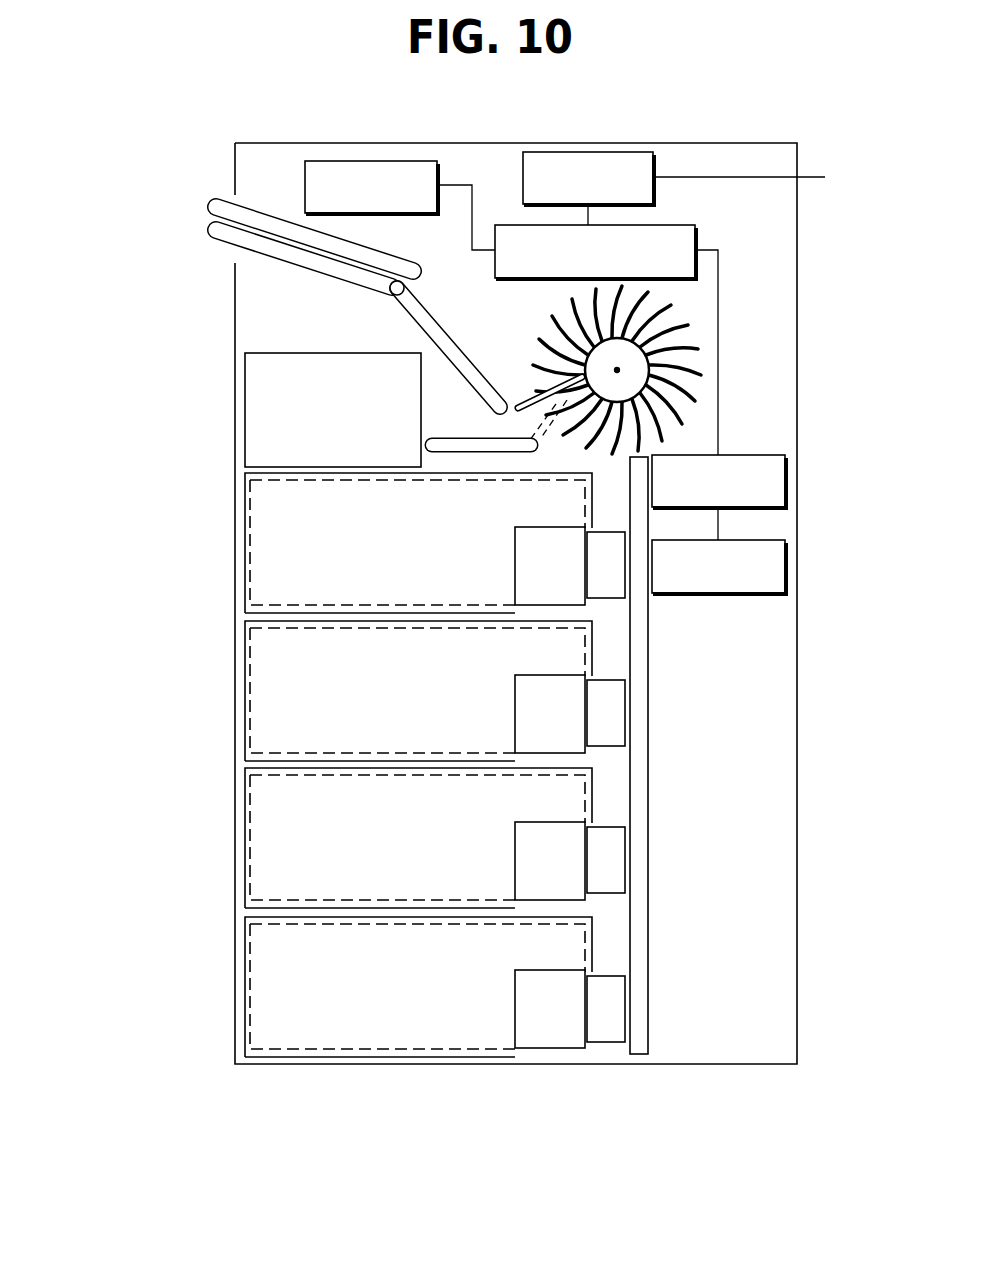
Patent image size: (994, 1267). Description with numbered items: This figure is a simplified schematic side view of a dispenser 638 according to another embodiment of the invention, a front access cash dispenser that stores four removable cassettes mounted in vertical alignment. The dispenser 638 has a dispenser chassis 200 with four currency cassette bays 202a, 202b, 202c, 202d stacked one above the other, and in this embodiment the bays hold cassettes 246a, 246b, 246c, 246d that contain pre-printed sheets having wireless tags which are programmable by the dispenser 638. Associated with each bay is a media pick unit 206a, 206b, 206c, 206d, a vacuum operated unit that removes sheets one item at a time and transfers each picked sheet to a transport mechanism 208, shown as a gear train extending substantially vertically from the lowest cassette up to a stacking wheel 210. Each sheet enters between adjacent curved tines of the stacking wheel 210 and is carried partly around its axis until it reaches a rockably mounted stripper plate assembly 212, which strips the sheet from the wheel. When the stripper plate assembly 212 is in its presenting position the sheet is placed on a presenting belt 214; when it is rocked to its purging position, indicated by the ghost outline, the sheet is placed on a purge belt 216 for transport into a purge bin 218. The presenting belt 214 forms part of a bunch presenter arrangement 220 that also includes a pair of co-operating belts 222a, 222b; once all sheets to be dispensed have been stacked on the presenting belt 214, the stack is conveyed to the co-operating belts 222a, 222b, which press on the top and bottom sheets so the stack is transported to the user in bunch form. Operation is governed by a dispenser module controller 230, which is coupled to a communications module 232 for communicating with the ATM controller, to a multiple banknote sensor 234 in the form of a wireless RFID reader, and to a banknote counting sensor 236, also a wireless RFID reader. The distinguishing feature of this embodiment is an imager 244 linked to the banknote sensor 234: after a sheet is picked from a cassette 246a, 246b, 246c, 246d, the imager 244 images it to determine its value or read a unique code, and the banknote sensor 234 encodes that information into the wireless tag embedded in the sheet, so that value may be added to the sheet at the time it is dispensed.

The dispenser chassis 200 is at (797, 982).
The currency cassette bay 202a is at (245, 1022).
The currency cassette bay 202b is at (245, 835).
The currency cassette bay 202c is at (245, 683).
The currency cassette bay 202d is at (245, 536).
The media pick unit 206a is at (607, 1043).
The media pick unit 206b is at (625, 862).
The media pick unit 206c is at (625, 717).
The media pick unit 206d is at (607, 593).
The transport mechanism 208 is at (648, 947).
The stacking wheel 210 is at (685, 320).
The stripper plate assembly 212 is at (530, 402).
The presenting belt 214 is at (410, 308).
The purge belt 216 is at (477, 453).
The purge bin 218 is at (245, 406).
The bunch presenter arrangement 220 is at (280, 278).
The co-operating belt 222a is at (218, 228).
The co-operating belt 222b is at (216, 200).
The dispenser module controller 230 is at (695, 233).
The communications module 232 is at (597, 152).
The multiple banknote sensor 234 is at (785, 480).
The banknote counting sensor 236 is at (395, 161).
The imager 244 is at (785, 565).
The cassette 246a is at (533, 1008).
The cassette 246b is at (533, 854).
The cassette 246c is at (533, 713).
The cassette 246d is at (533, 572).
The dispenser 638 is at (165, 948).